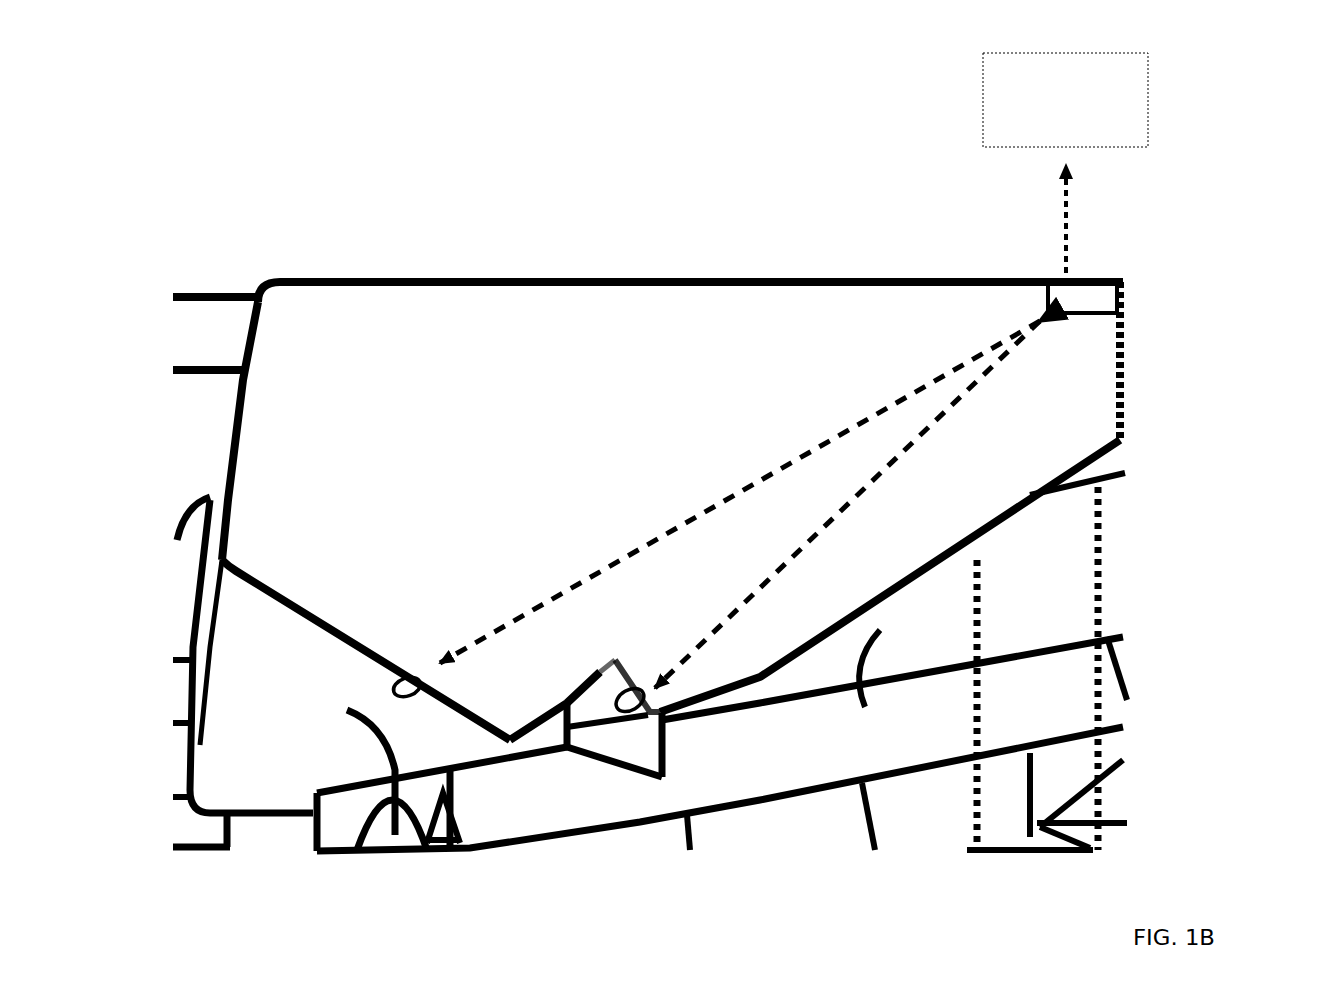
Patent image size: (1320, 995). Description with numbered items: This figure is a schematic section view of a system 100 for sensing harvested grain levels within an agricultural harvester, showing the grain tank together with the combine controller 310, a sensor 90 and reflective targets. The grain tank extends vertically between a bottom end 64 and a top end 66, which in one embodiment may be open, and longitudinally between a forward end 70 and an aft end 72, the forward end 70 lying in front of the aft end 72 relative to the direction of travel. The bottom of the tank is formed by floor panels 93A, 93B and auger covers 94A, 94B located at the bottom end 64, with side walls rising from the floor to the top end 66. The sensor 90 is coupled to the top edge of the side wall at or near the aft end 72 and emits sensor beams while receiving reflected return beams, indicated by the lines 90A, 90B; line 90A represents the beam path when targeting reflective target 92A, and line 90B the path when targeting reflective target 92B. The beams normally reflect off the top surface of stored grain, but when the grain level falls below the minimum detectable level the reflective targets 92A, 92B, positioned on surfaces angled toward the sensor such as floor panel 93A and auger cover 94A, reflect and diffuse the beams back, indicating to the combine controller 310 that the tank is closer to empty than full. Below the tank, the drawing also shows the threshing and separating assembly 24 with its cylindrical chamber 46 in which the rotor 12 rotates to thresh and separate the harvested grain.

The system for sensing harvested grain levels 100 is at (667, 502).
The top end 66 is at (505, 270).
The forward end 70 is at (222, 433).
The aft end 72 is at (1125, 405).
The bottom end 64 is at (514, 752).
The floor panel 93A is at (352, 622).
The floor panel 93B is at (850, 610).
The auger cover 94A is at (660, 698).
The auger cover 94B is at (558, 697).
The reflective target 92A is at (410, 700).
The reflective target 92B is at (647, 718).
The sensor 90 is at (1046, 280).
The sensor beam 90A is at (740, 475).
The sensor beam 90B is at (913, 457).
The combine controller 310 is at (1065, 163).
The rotor 12 is at (284, 672).
The threshing and separating assembly 24 is at (720, 744).
The cylindrical chamber 46 is at (993, 661).